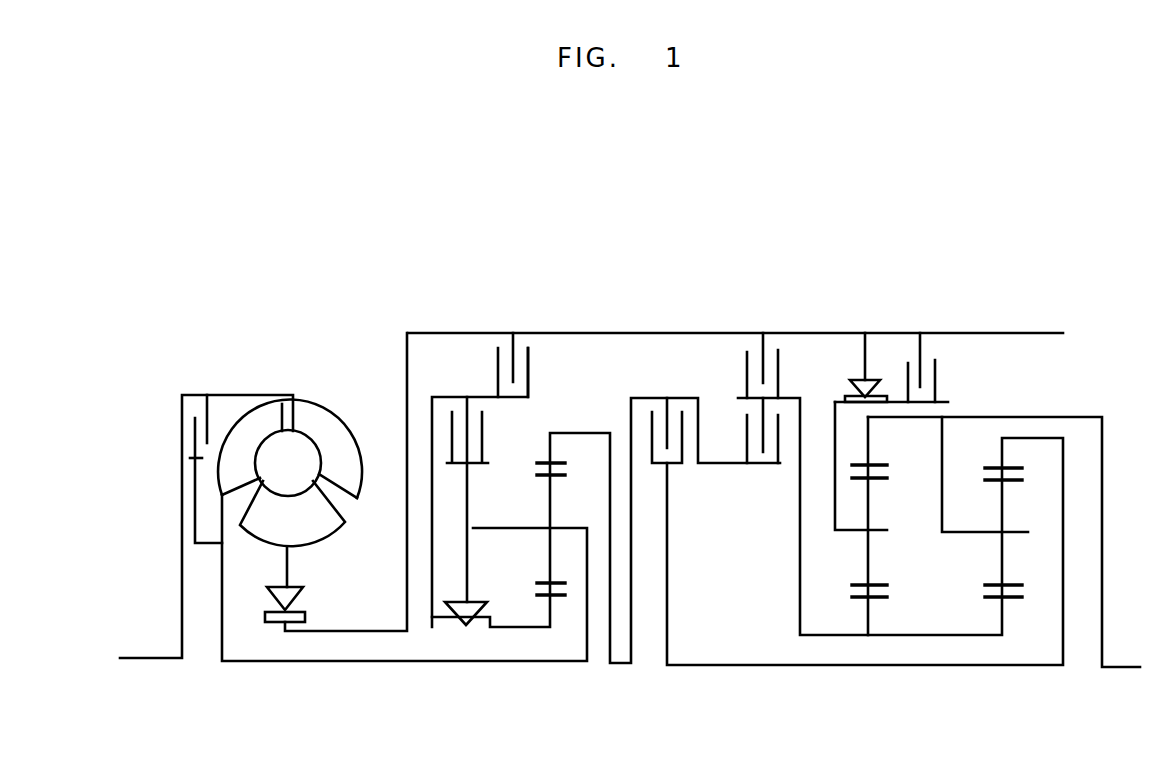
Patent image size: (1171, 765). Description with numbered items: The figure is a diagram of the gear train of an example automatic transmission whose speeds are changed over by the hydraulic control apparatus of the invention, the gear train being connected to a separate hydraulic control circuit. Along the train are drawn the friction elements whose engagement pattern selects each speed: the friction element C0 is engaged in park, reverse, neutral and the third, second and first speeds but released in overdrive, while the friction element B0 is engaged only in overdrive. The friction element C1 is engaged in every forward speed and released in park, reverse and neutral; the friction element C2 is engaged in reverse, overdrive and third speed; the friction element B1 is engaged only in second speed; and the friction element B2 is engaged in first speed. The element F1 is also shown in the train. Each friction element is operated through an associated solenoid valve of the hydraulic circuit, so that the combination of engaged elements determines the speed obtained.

The friction element C0 is at (447, 420).
The friction element B0 is at (490, 351).
The friction element C1 is at (671, 388).
The friction element B1 is at (743, 367).
The friction element C2 is at (786, 432).
The one-way clutch F1 is at (879, 378).
The friction element B2 is at (952, 378).